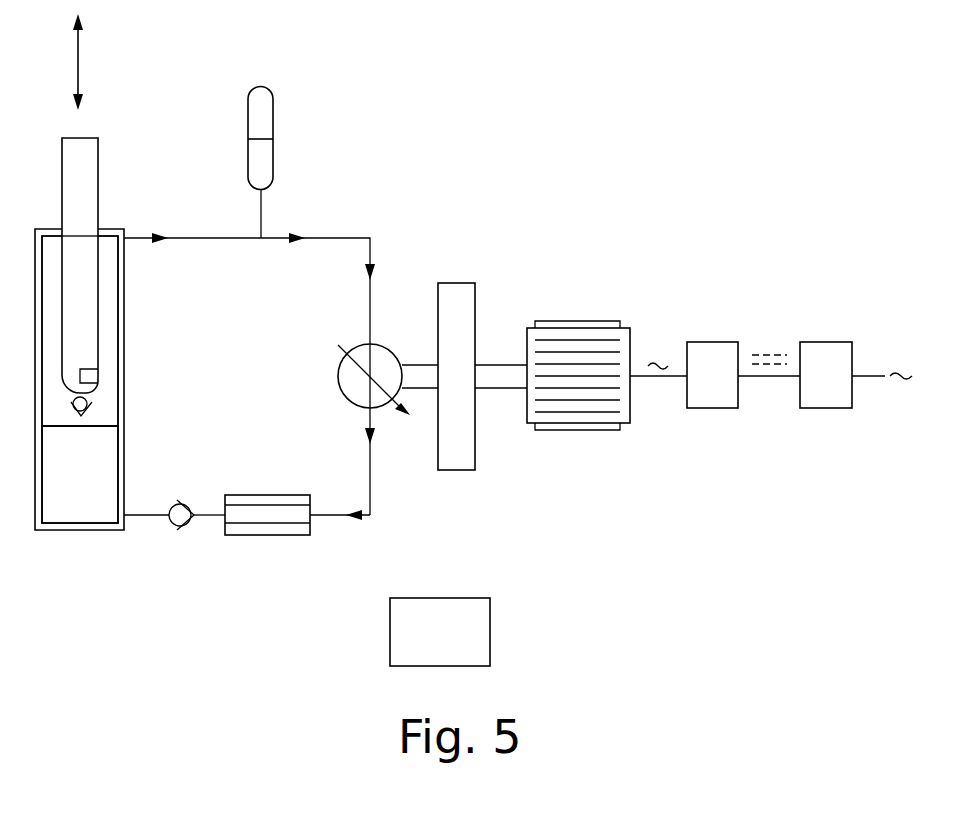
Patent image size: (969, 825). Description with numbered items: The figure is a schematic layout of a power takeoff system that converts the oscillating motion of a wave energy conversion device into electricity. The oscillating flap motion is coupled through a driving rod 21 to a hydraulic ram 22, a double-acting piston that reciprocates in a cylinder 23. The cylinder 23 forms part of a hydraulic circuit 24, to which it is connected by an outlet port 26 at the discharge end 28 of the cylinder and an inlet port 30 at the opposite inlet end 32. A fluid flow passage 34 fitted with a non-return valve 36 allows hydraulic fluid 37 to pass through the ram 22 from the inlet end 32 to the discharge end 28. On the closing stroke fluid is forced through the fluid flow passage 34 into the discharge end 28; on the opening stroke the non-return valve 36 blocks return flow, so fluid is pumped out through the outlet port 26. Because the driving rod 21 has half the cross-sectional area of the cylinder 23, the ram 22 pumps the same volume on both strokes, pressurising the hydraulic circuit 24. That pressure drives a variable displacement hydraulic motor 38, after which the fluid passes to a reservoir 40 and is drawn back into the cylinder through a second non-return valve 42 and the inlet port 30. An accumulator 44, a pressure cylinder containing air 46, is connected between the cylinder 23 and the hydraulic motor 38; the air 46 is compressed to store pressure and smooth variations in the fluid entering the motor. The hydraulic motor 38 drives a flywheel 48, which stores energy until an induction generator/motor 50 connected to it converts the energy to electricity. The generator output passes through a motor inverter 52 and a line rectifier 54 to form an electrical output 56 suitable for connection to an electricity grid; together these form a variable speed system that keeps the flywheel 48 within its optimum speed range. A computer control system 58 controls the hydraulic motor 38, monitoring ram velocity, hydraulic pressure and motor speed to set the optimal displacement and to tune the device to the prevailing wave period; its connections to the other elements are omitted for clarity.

The driving rod 21 is at (100, 167).
The hydraulic ram 22 is at (53, 408).
The cylinder 23 is at (33, 518).
The hydraulic circuit 24 is at (217, 238).
The outlet port 26 is at (125, 240).
The discharge end 28 is at (52, 255).
The inlet port 30 is at (128, 517).
The inlet end 32 is at (82, 507).
The fluid flow passage 34 is at (105, 392).
The non-return valve 36 is at (82, 427).
The hydraulic fluid 37 is at (272, 512).
The variable displacement hydraulic motor 38 is at (383, 347).
The reservoir 40 is at (267, 537).
The second non-return valve 42 is at (185, 523).
The accumulator 44 is at (275, 148).
The air 46 is at (260, 118).
The flywheel 48 is at (460, 317).
The induction generator/motor 50 is at (573, 428).
The motor inverter 52 is at (718, 342).
The line rectifier 54 is at (830, 342).
The electrical output 56 is at (893, 356).
The computer control system 58 is at (450, 647).